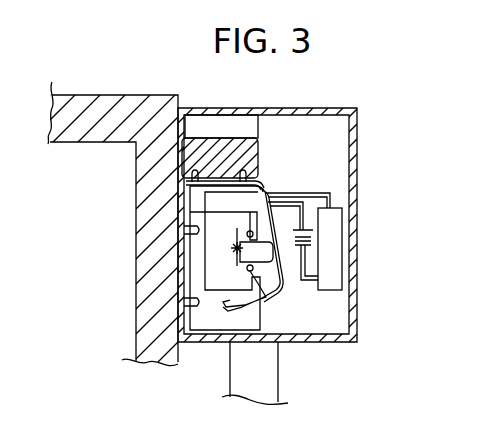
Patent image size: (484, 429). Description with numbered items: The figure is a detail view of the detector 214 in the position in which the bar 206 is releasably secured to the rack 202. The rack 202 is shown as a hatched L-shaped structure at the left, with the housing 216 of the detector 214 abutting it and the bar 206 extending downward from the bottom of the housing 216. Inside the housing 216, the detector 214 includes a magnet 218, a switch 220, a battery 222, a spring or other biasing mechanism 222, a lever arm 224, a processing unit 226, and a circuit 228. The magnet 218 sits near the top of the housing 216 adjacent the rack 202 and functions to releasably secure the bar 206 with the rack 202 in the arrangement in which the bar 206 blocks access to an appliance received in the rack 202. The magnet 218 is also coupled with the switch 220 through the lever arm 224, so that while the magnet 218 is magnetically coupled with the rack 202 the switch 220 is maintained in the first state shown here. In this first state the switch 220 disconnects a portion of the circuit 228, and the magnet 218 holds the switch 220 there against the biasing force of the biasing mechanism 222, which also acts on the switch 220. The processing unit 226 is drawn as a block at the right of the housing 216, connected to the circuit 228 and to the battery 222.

The rack 202 is at (100, 95).
The bar 206 is at (279, 385).
The detector 214 is at (363, 58).
The housing 216 is at (356, 152).
The magnet 218 is at (223, 133).
The switch 220 is at (236, 262).
The biasing mechanism 222 is at (236, 250).
The lever arm 224 is at (260, 192).
The processing unit 226 is at (334, 243).
The circuit 228 is at (272, 298).